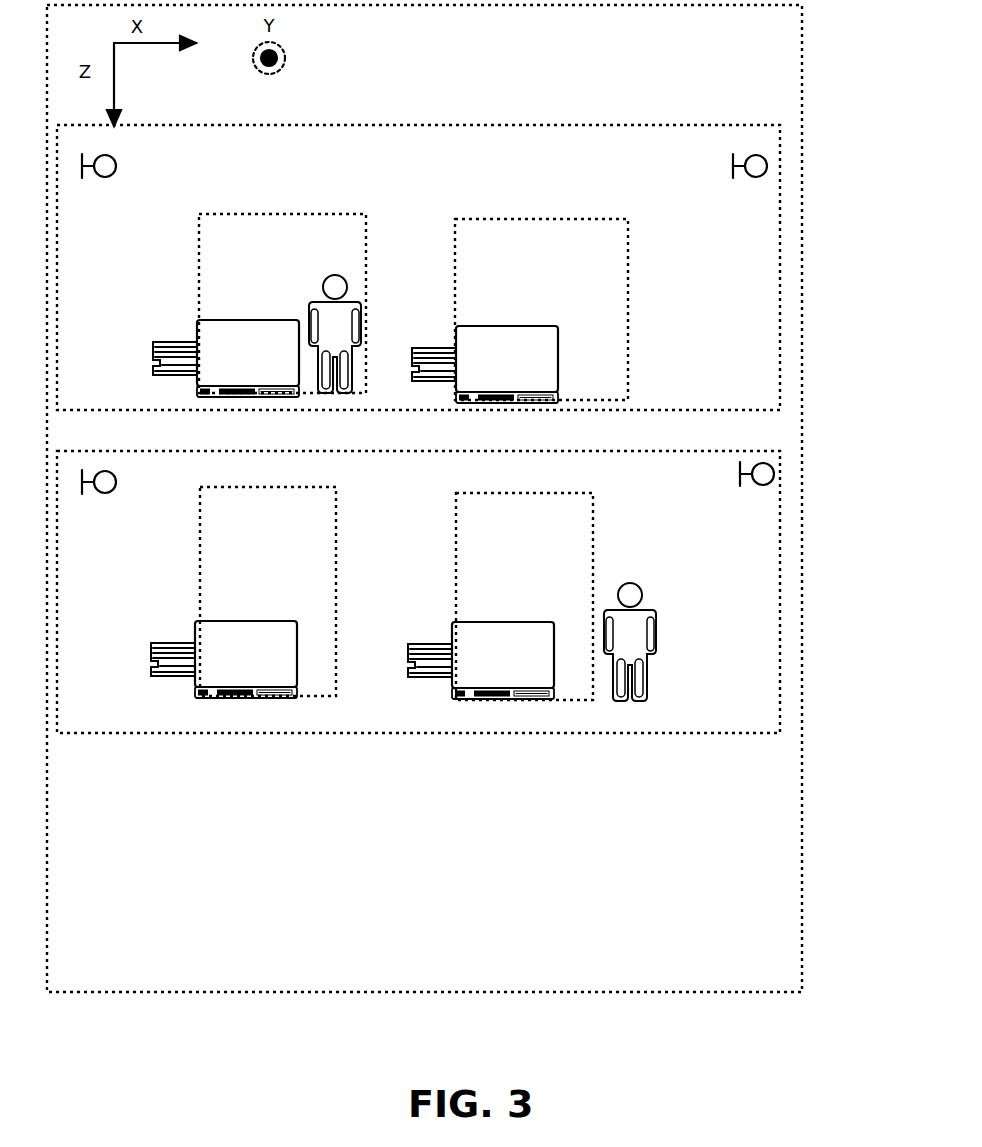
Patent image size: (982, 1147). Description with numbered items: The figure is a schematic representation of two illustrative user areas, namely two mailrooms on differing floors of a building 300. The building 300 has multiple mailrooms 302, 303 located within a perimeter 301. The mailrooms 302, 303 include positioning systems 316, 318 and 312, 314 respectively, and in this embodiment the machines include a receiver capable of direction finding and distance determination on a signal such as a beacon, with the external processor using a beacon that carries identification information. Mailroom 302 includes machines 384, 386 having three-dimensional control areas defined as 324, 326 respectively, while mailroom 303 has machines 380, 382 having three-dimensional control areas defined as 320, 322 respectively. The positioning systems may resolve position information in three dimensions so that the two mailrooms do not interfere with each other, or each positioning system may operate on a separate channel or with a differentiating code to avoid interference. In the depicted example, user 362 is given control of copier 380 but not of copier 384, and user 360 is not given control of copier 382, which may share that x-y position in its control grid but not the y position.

The building 300 is at (672, 1024).
The perimeter 301 is at (802, 913).
The mailroom 302 is at (737, 733).
The mailroom 303 is at (737, 410).
The positioning system 312 is at (120, 183).
The positioning system 314 is at (755, 190).
The positioning system 316 is at (120, 497).
The positioning system 318 is at (764, 492).
The 3-D control area 320 is at (248, 214).
The 3-D control area 322 is at (495, 219).
The 3-D control area 324 is at (336, 523).
The 3-D control area 326 is at (593, 533).
The user 360 is at (655, 648).
The user 362 is at (350, 328).
The machine 380 is at (218, 325).
The machine 382 is at (490, 330).
The machine 384 is at (235, 621).
The machine 386 is at (482, 625).